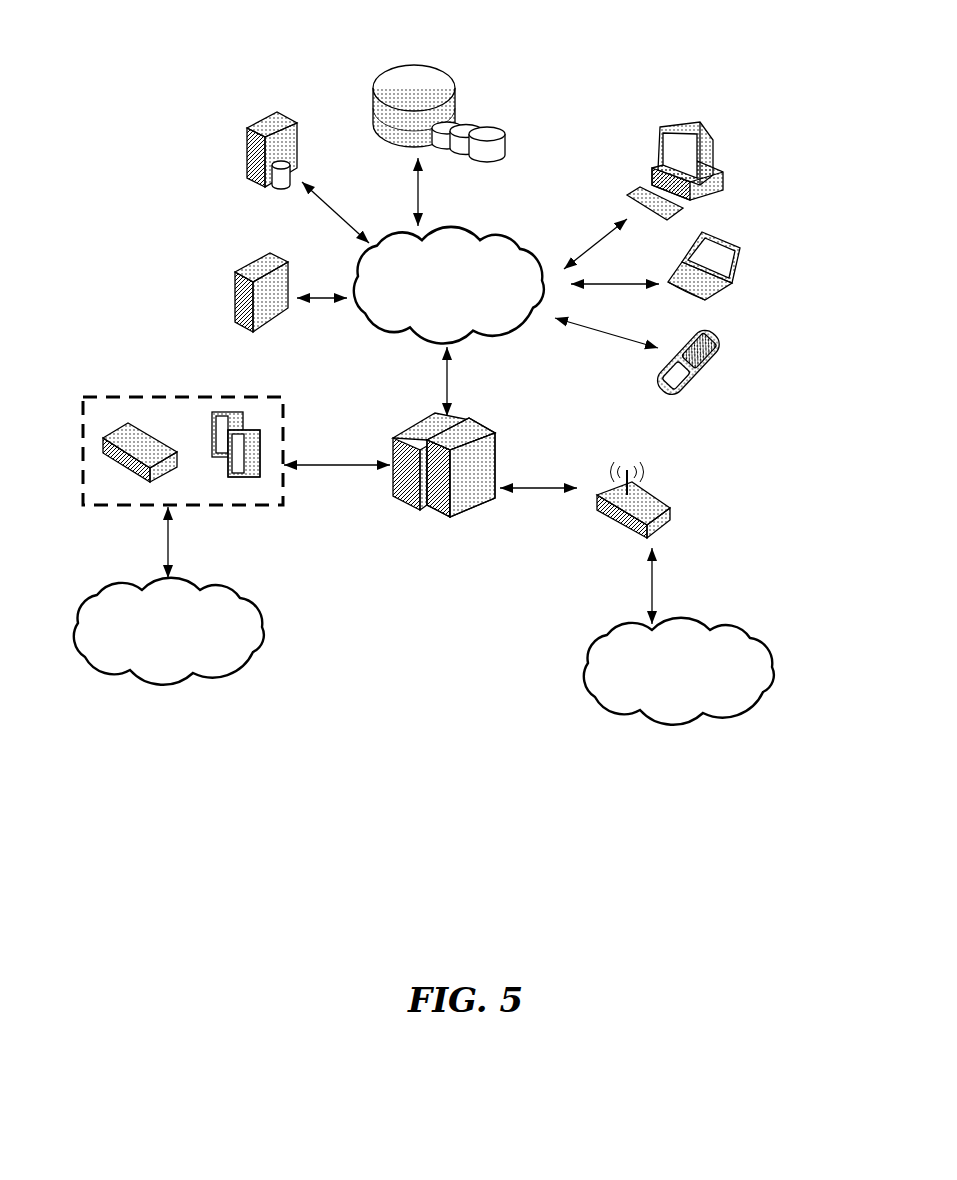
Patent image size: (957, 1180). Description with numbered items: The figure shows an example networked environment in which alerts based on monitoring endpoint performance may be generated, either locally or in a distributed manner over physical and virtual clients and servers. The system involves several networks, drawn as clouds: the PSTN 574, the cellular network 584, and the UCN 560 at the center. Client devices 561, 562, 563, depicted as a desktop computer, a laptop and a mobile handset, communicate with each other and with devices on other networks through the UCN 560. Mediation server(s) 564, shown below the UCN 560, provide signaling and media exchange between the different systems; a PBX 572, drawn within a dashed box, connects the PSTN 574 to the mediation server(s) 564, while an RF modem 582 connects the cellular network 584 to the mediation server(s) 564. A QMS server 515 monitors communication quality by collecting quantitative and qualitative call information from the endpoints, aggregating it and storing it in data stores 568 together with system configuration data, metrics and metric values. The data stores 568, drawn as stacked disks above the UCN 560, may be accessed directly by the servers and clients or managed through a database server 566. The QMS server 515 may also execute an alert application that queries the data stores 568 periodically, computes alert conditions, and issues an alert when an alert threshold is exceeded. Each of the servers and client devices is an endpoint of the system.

The UCN 560 is at (454, 216).
The data stores 568 is at (432, 46).
The database server 566 is at (283, 194).
The QMS server 515 is at (228, 276).
The client device 561 is at (712, 114).
The client device 562 is at (743, 227).
The client device 563 is at (714, 333).
The mediation server 564 is at (418, 418).
The PBX 572 is at (133, 392).
The PSTN 574 is at (131, 688).
The RF modem 582 is at (629, 449).
The cellular network 584 is at (643, 727).